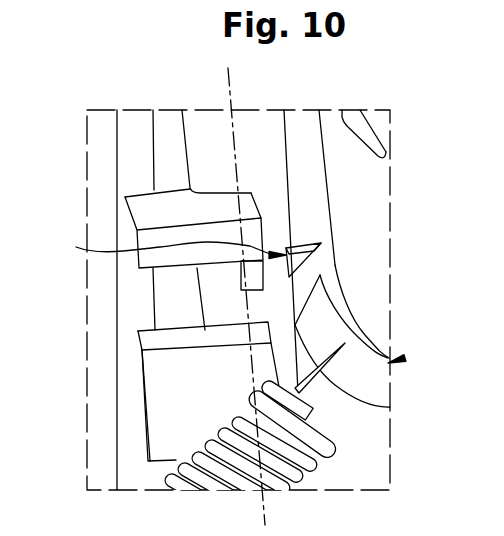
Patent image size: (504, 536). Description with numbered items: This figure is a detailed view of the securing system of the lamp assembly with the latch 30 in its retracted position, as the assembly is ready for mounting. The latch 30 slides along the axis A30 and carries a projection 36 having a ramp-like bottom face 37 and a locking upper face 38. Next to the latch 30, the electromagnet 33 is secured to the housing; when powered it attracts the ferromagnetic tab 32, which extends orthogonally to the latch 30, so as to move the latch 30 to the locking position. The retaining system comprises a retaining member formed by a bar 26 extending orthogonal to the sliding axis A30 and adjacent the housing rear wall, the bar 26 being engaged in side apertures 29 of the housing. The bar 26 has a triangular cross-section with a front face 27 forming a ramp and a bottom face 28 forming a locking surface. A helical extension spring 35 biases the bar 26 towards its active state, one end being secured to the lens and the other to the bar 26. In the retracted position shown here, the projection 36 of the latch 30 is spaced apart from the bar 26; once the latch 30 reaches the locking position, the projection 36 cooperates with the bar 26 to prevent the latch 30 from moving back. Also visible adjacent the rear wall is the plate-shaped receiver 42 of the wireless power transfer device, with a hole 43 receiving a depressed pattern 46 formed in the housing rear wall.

The bar 26 is at (406, 359).
The front face 27 is at (359, 370).
The bottom face 28 is at (362, 398).
The side apertures 29 is at (322, 279).
The latch 30 is at (200, 138).
The axis A30 is at (235, 125).
The tab 32 is at (145, 202).
The electromagnet 33 is at (180, 386).
The spring 35 is at (318, 460).
The projection 36 is at (165, 246).
The ramp-like bottom face 37 is at (316, 258).
The locking upper face 38 is at (305, 247).
The receiver 42 is at (362, 176).
The holes 43 is at (349, 116).
The depressed pattern 46 is at (371, 116).